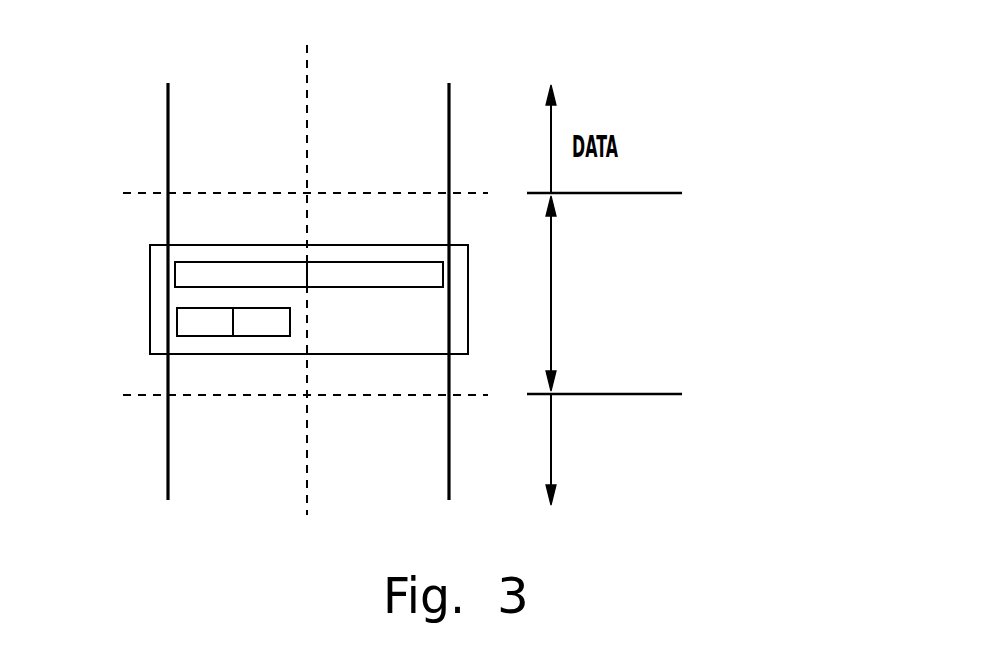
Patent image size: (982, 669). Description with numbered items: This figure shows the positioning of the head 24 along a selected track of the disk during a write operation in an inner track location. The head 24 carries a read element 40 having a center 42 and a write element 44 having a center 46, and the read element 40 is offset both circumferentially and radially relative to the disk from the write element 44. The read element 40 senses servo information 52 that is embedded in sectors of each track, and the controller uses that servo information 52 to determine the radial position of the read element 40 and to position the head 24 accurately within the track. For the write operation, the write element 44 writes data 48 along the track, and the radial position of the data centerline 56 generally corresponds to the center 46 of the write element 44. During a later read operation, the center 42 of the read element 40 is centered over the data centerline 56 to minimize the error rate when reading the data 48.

The head 24 is at (148, 270).
The read element 40 is at (195, 308).
The center of the read element 42 is at (235, 320).
The write element 44 is at (197, 262).
The center of the write element 46 is at (307, 270).
The data 48 is at (627, 432).
The servo information 52 is at (703, 282).
The data centerline 56 is at (306, 38).